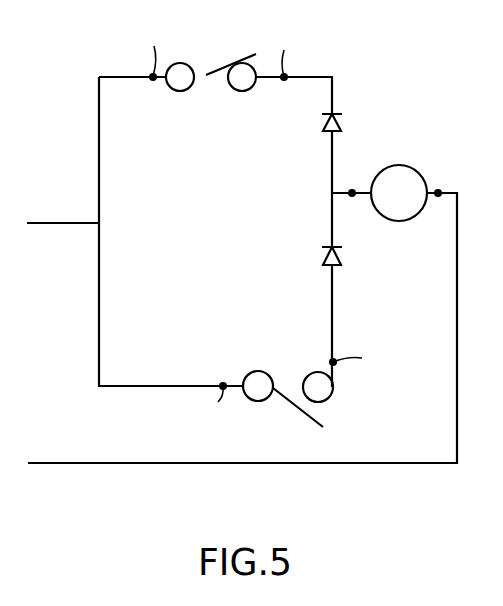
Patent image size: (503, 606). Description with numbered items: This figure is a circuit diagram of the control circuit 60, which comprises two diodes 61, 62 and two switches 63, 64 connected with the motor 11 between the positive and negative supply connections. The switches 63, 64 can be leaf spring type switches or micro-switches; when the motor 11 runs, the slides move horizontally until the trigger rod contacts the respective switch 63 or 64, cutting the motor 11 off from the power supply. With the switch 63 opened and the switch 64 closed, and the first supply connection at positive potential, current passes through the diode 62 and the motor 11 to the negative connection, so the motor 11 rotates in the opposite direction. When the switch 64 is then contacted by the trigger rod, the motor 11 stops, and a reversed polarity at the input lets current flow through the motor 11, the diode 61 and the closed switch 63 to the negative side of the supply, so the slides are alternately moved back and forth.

The control circuit 60 is at (345, 74).
The diode 61 is at (343, 125).
The diode 62 is at (345, 263).
The switch 63 is at (210, 73).
The switch 64 is at (277, 371).
The motor 11 is at (423, 174).